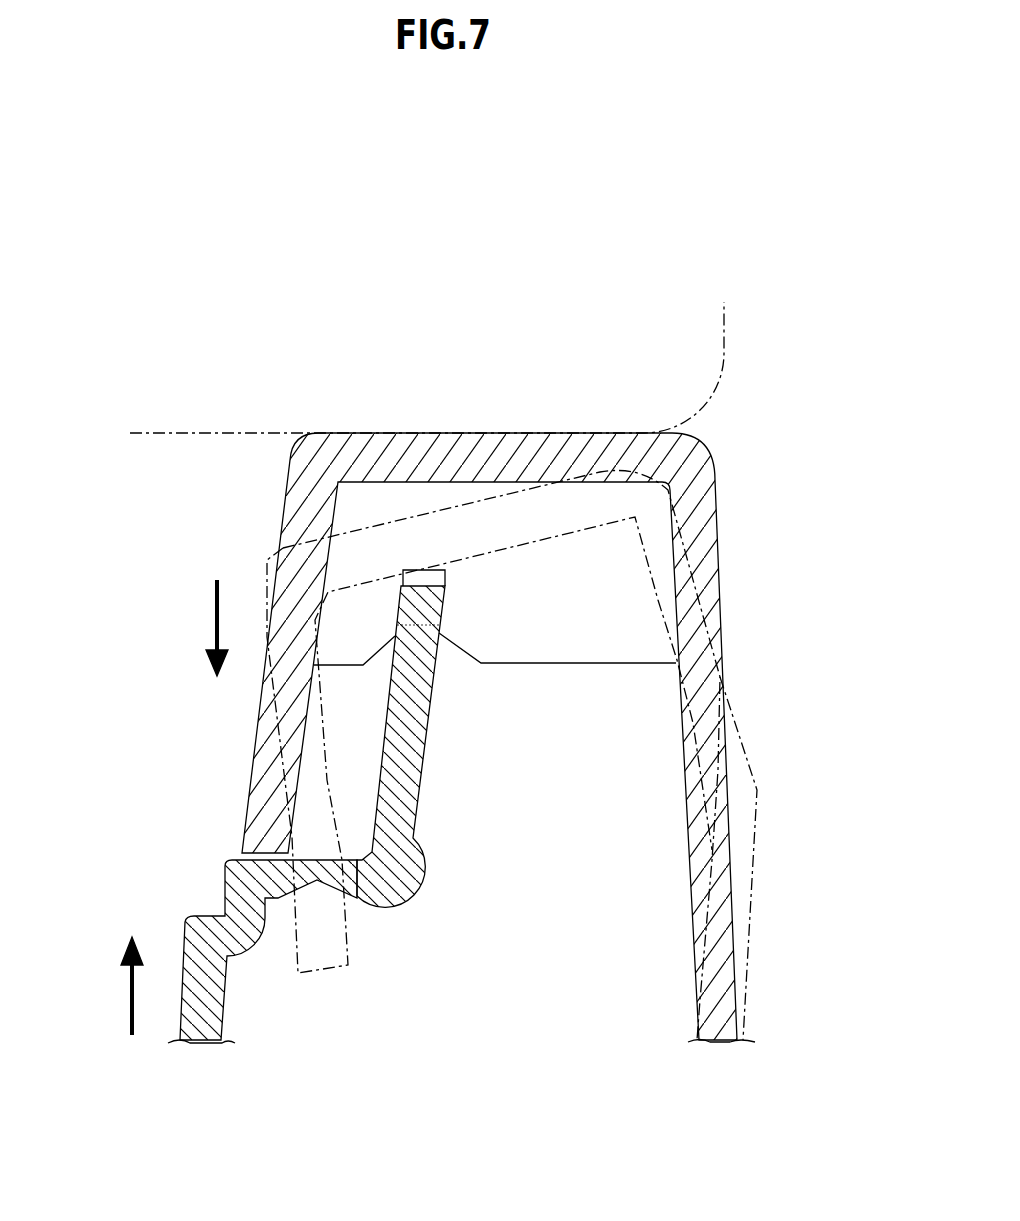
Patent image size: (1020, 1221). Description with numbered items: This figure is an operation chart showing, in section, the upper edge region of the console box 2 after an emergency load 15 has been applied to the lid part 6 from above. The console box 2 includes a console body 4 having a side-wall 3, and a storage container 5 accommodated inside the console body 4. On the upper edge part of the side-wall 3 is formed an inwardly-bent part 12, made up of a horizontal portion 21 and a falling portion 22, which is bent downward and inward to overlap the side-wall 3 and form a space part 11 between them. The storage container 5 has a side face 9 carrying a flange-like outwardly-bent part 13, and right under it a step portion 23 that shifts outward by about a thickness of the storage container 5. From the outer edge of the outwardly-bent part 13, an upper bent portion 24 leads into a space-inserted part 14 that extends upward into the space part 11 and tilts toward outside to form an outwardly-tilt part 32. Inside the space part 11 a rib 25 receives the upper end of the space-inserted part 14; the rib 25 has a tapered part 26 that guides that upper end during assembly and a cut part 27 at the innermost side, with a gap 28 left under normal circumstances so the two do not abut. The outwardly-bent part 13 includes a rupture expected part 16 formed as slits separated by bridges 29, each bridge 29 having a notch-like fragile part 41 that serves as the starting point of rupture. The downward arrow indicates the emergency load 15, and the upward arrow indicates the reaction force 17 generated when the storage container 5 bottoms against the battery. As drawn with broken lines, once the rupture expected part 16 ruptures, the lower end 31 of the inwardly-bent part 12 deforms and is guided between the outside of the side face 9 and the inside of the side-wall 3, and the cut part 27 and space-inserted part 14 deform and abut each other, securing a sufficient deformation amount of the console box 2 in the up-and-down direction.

The console box 2 is at (461, 584).
The side-wall 3 is at (745, 1035).
The console body 4 is at (748, 952).
The storage container 5 is at (213, 946).
The lid part 6 is at (724, 312).
The side face 9 is at (222, 1030).
The space part 11 is at (648, 728).
The inwardly-bent part 12 is at (412, 638).
The outwardly-bent part 13 is at (257, 853).
The space-inserted part 14 is at (459, 632).
The outwardly-tilt part 32 is at (401, 746).
The emergency load 15 is at (212, 618).
The rupture expected part 16 is at (352, 845).
The reaction force 17 is at (126, 995).
The horizontal portion 21 is at (413, 433).
The falling portion 22 is at (283, 533).
The step portion 23 is at (228, 872).
The upper bent portion 24 is at (384, 895).
The rib 25 is at (597, 662).
The tapered part 26 is at (468, 655).
The cut part 27 is at (447, 570).
The gap 28 is at (425, 590).
The bridge 29 is at (353, 810).
The lower end 31 is at (257, 838).
The fragile part 41 is at (337, 897).